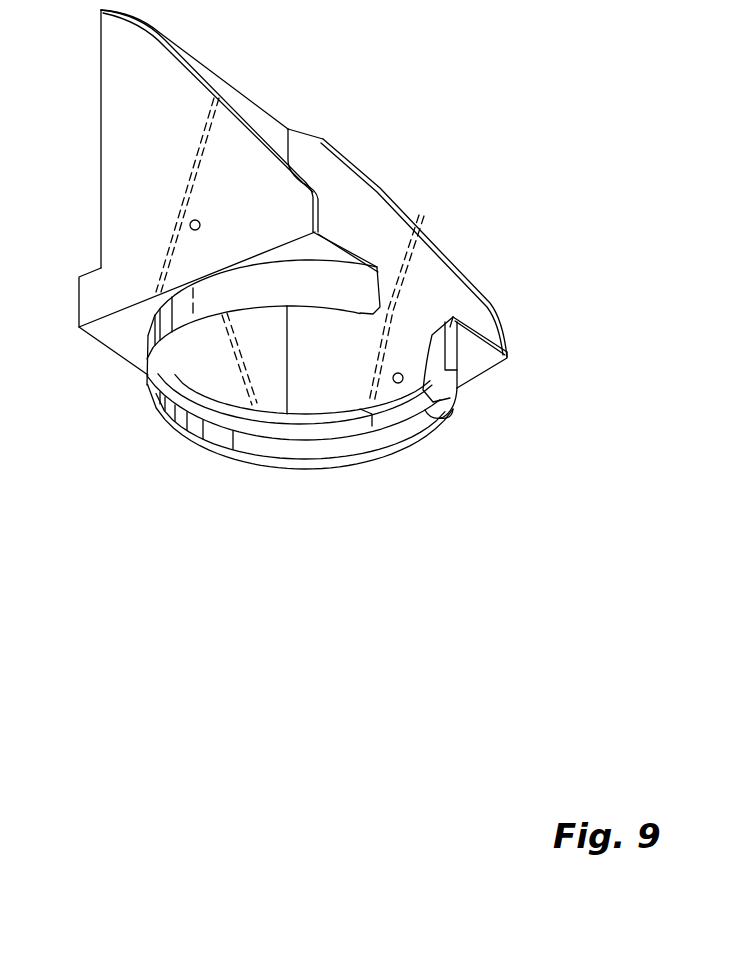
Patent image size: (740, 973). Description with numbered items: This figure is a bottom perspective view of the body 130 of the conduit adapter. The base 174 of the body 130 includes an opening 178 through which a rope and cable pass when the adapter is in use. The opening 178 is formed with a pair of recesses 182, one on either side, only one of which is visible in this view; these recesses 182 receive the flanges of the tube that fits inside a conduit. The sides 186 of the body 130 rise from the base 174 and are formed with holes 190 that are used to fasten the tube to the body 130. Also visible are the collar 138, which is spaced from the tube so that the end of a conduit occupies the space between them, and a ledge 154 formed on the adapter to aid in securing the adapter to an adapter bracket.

The body 130 is at (268, 124).
The collar 138 is at (428, 413).
The ledge 154 is at (88, 268).
The base 174 is at (477, 357).
The opening 178 is at (255, 368).
The recesses 182 is at (393, 396).
The sides 186 is at (170, 142).
The holes 190 is at (190, 224).